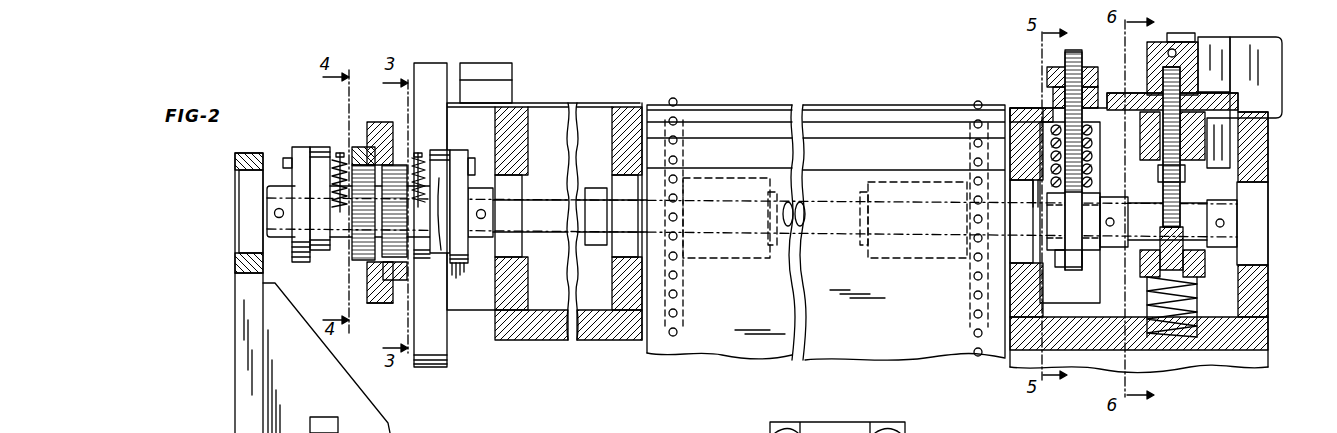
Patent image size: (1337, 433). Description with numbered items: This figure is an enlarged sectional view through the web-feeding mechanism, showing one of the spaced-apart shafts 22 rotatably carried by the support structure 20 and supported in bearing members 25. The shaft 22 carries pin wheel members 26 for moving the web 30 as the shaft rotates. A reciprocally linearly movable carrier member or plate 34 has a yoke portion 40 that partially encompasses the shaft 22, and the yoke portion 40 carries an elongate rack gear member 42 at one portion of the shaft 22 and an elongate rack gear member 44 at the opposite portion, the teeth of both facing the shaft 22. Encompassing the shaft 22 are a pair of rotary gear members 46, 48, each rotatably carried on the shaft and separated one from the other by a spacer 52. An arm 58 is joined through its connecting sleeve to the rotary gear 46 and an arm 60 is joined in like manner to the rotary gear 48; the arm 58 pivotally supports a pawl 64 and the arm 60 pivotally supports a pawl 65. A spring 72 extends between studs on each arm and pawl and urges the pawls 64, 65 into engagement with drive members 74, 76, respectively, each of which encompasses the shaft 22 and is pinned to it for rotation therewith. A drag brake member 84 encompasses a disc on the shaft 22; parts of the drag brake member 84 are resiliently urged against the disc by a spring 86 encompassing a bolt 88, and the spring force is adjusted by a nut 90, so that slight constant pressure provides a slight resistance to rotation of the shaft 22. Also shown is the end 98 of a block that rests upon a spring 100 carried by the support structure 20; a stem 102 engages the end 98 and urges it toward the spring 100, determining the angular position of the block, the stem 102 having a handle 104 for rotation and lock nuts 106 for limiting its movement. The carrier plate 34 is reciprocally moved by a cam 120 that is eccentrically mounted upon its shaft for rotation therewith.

The support structure 20 is at (507, 297).
The shaft 22 is at (550, 230).
The bearing member 25 is at (245, 188).
The pin wheel member 26 is at (683, 140).
The web 30 is at (873, 115).
The carrier member or plate 34 is at (367, 305).
The yoke portion 40 is at (378, 125).
The rack gear member 42 is at (360, 150).
The rack gear member 44 is at (395, 283).
The rotary gear member 46 is at (353, 257).
The rotary gear member 48 is at (402, 252).
The spacer 52 is at (362, 278).
The arm 58 is at (315, 172).
The arm 60 is at (438, 193).
The pawl 64 is at (297, 148).
The pawl 65 is at (460, 150).
The spring 72 is at (338, 165).
The drive member 74 is at (293, 222).
The drive member 76 is at (462, 253).
The drag brake member 84 is at (1092, 300).
The spring 86 is at (1090, 127).
The bolt 88 is at (1083, 264).
The nut 90 is at (1090, 72).
The end 98 is at (1170, 237).
The spring 100 is at (1177, 333).
The stem 102 is at (1187, 203).
The handle 104 is at (1173, 53).
The lock nut 106 is at (1152, 173).
The cam 120 is at (440, 355).